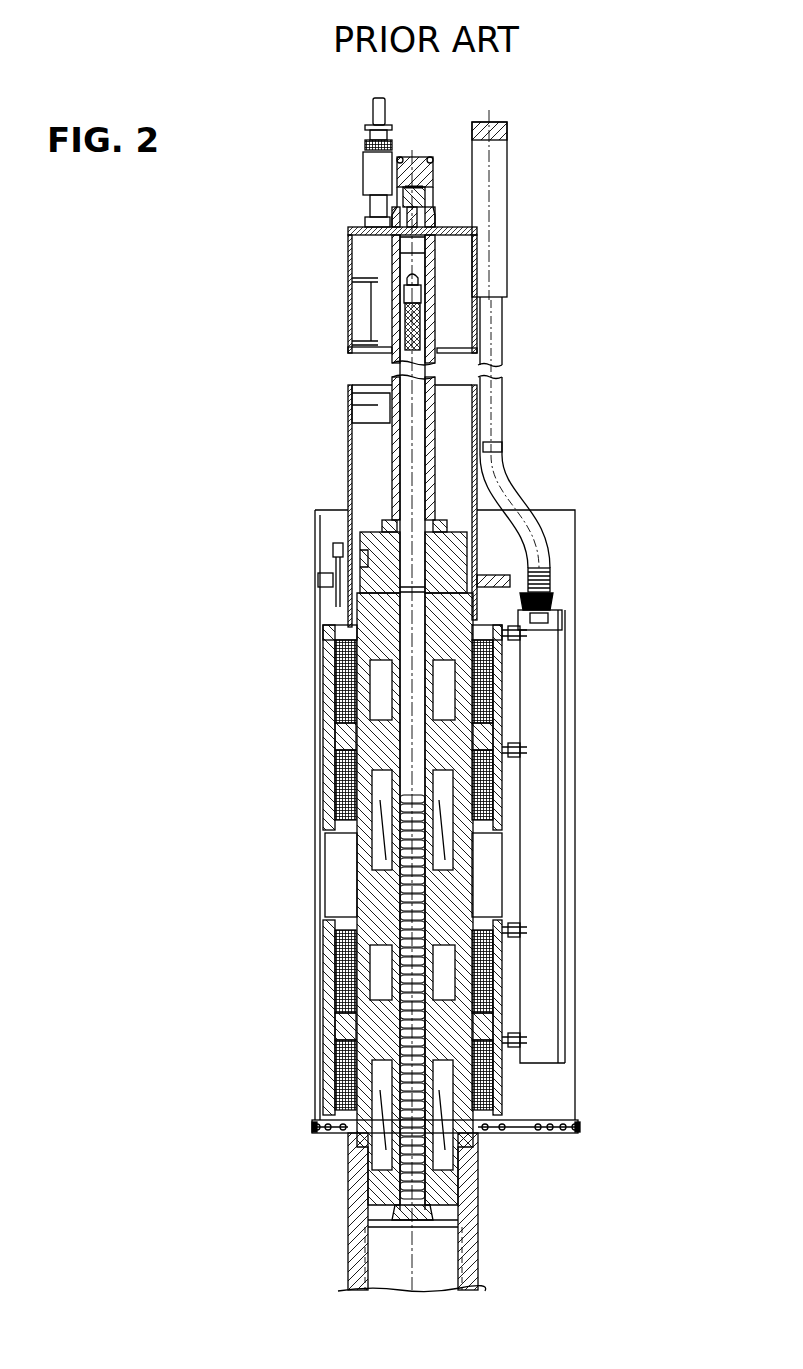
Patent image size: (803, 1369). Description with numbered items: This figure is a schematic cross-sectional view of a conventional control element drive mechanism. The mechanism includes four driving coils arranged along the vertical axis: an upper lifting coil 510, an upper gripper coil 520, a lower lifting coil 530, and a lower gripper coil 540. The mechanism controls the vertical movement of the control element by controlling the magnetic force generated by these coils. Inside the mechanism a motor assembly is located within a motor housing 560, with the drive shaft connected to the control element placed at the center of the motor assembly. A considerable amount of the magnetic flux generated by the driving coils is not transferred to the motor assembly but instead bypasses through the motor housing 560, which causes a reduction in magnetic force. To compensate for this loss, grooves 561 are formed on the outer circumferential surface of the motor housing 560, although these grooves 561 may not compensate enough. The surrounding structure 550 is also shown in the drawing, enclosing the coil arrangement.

The upper lifting coil 510 is at (485, 683).
The upper gripper coil 520 is at (485, 793).
The lower lifting coil 530 is at (335, 970).
The lower gripper coil 540 is at (338, 1078).
The frame 550 is at (575, 527).
The motor housing 560 is at (467, 1247).
The grooves 561 is at (470, 970).